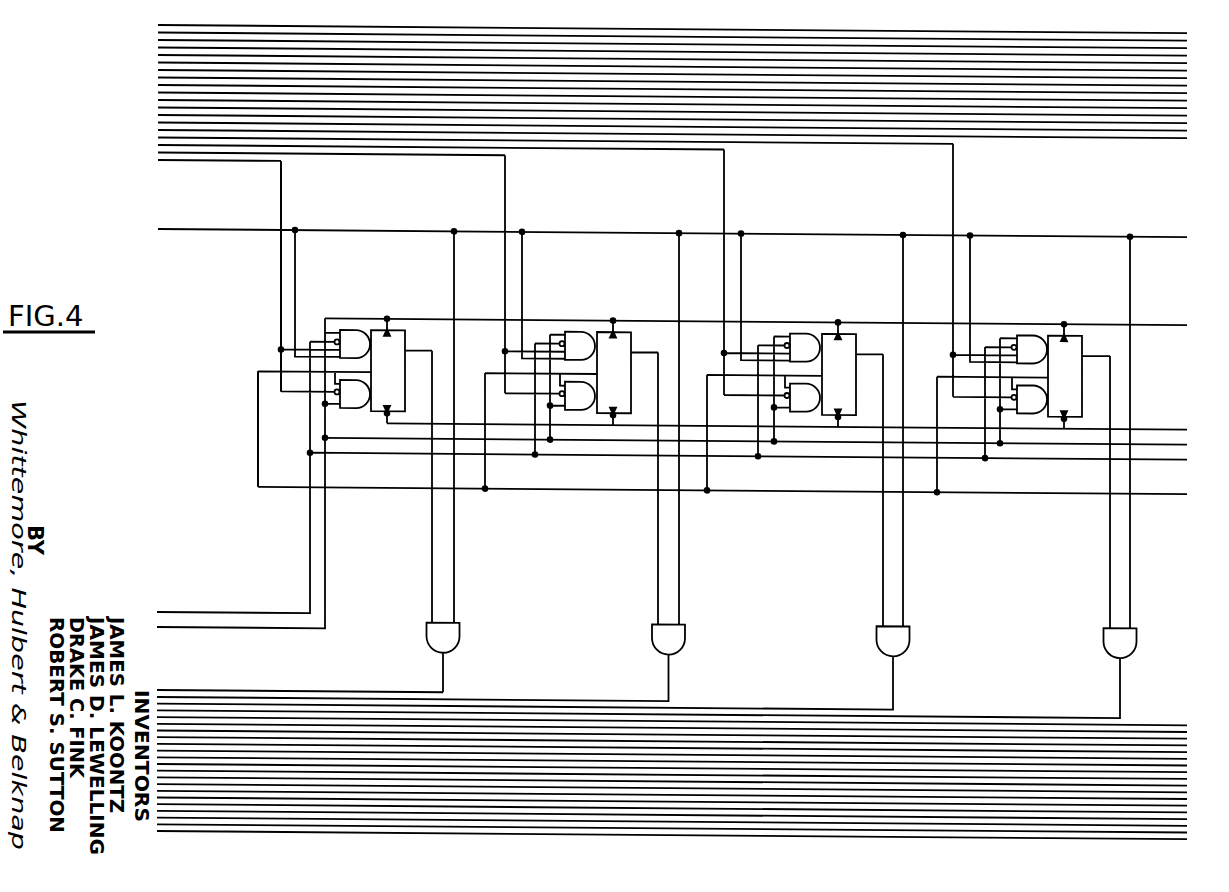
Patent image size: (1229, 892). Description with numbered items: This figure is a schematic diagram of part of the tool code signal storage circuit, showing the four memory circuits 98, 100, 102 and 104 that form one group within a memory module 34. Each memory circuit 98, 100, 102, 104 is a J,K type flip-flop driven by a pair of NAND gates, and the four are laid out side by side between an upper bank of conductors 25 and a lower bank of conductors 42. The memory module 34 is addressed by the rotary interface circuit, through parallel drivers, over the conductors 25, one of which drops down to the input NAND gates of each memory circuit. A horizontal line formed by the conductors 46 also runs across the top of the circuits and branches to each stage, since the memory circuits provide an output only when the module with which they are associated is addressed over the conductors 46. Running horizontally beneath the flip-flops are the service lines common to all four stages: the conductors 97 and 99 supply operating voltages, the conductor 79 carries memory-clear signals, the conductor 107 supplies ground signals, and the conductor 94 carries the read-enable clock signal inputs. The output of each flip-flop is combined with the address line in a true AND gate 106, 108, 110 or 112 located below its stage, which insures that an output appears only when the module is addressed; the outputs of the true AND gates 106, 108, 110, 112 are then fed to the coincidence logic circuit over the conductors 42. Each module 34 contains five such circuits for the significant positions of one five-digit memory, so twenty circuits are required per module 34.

The conductors 25 is at (238, 163).
The memory module 34 is at (240, 313).
The conductors 42 is at (370, 688).
The conductors 46 is at (1131, 284).
The conductor 79 is at (1167, 410).
The conductor 94 is at (1175, 486).
The conductor 97 is at (1147, 317).
The memory circuit 98 is at (407, 329).
The conductor 99 is at (1182, 436).
The memory circuit 100 is at (632, 330).
The memory circuit 102 is at (855, 331).
The memory circuit 104 is at (1085, 331).
The true AND gate 106 is at (425, 628).
The conductor 107 is at (1183, 452).
The true AND gate 108 is at (652, 633).
The true AND gate 110 is at (878, 631).
The true AND gate 112 is at (1105, 630).